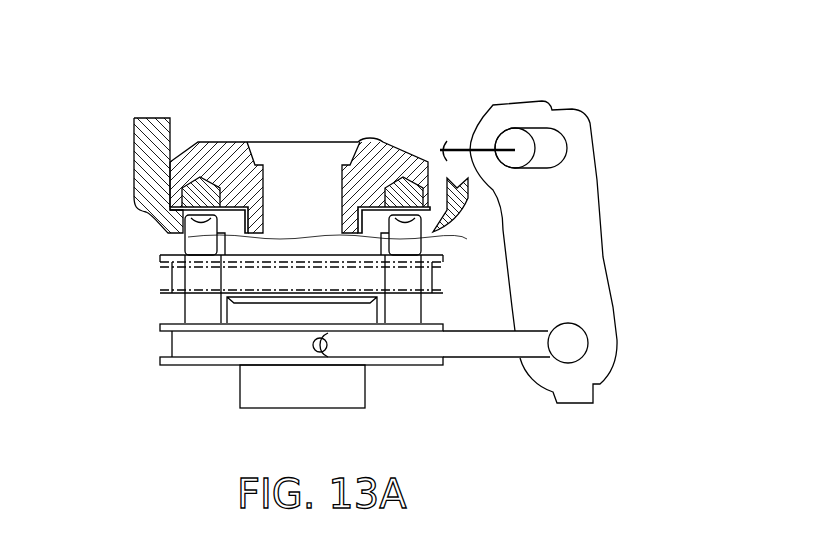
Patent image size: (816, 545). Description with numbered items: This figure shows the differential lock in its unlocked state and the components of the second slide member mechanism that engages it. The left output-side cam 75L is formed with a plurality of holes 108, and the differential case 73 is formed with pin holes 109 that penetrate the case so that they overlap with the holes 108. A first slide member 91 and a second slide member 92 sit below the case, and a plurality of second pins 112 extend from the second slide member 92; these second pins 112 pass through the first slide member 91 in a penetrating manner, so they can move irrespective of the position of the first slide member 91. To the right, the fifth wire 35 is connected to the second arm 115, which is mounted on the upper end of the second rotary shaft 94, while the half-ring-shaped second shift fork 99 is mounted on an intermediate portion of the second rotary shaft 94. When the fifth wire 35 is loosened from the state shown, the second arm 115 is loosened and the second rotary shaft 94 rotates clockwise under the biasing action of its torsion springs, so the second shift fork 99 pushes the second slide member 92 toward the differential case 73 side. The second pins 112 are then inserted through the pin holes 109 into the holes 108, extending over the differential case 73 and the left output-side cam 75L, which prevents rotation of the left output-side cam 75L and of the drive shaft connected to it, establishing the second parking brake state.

The differential case 73 is at (140, 158).
The left output-side cam 75L is at (374, 140).
The holes 108 is at (200, 177).
The pin holes 109 is at (188, 236).
The second pins 112 is at (188, 247).
The first slide member 91 is at (170, 278).
The second slide member 92 is at (172, 343).
The second shift fork 99 is at (477, 348).
The second rotary shaft 94 is at (570, 343).
The second arm 115 is at (560, 247).
The fifth wire 35 is at (450, 147).